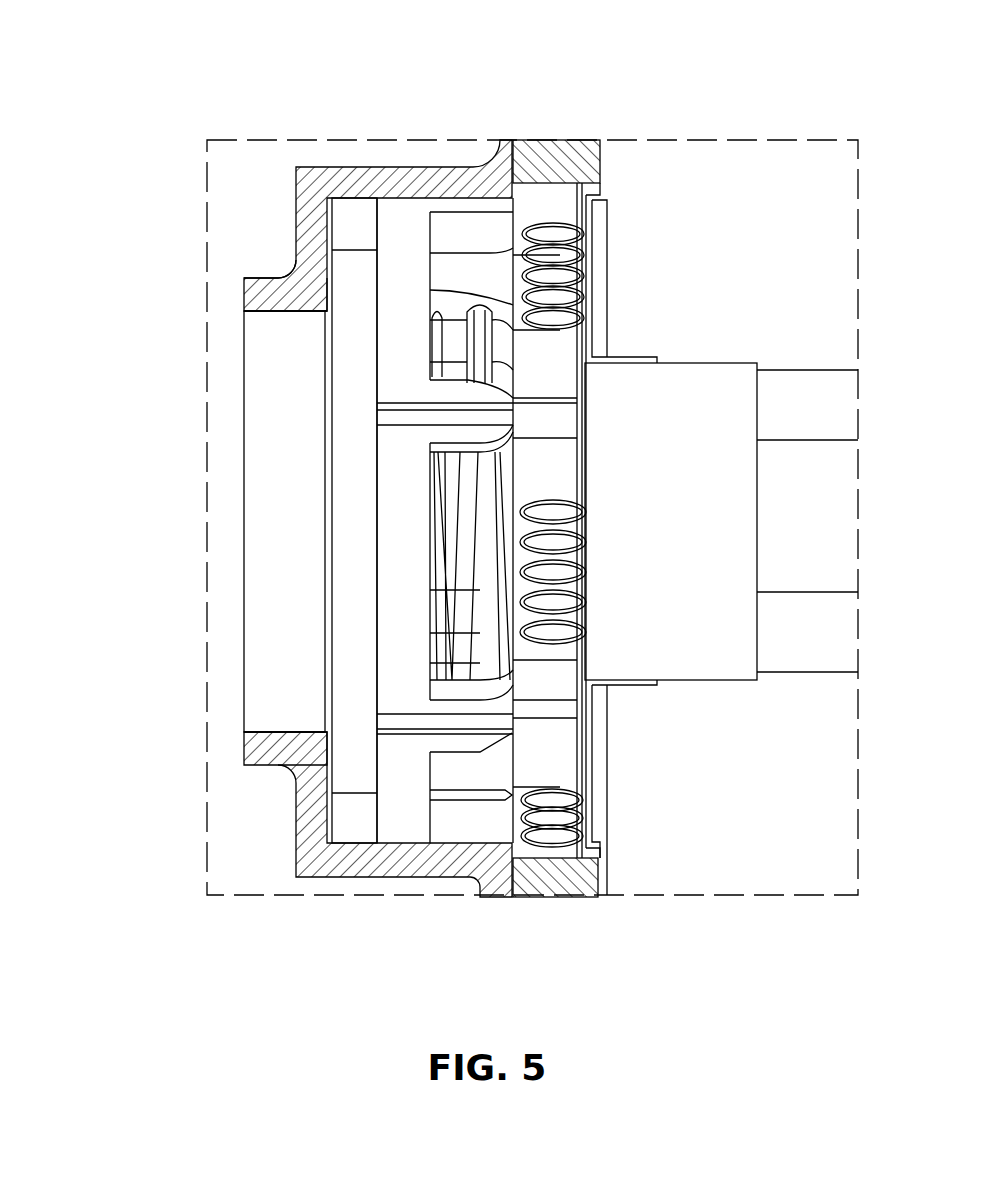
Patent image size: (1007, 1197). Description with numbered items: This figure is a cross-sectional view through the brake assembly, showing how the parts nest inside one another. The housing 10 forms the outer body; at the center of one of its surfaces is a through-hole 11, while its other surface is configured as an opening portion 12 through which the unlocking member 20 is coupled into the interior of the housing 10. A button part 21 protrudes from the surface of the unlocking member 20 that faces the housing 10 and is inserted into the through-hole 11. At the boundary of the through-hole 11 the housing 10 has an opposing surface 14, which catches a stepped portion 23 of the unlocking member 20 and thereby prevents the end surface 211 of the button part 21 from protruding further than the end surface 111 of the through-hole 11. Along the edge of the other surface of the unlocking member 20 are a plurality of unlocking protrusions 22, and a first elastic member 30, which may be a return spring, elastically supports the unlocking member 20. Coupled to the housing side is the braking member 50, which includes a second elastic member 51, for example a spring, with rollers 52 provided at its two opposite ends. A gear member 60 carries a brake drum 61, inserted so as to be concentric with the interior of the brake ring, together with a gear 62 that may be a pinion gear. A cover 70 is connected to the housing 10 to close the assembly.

The housing 10 is at (310, 158).
The through-hole 11 is at (275, 311).
The opening portion 12 is at (490, 216).
The opposing surface 14 is at (330, 766).
The unlocking member 20 is at (395, 185).
The button part 21 is at (243, 482).
The end surface of the button part 211 is at (243, 703).
The end surface of the through-hole 111 is at (244, 748).
The unlocking protrusion 22 is at (470, 733).
The stepped portion 23 is at (300, 275).
The first elastic member 30 is at (470, 280).
The braking member 50 is at (713, 55).
The second elastic member 51 is at (580, 240).
The roller 52 is at (550, 202).
The gear member 60 is at (718, 354).
The brake drum 61 is at (565, 425).
The gear 62 is at (810, 382).
The cover 70 is at (622, 772).